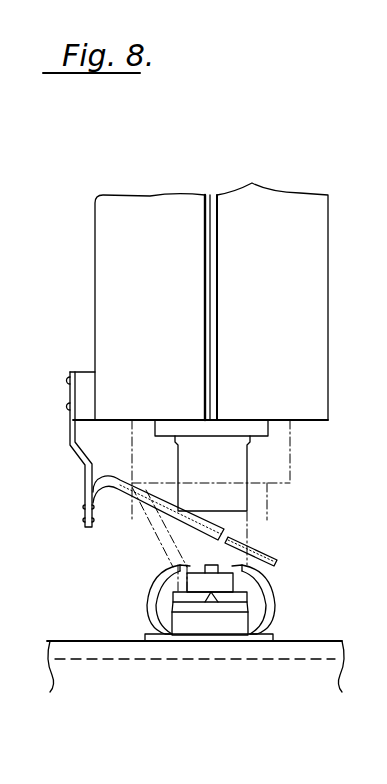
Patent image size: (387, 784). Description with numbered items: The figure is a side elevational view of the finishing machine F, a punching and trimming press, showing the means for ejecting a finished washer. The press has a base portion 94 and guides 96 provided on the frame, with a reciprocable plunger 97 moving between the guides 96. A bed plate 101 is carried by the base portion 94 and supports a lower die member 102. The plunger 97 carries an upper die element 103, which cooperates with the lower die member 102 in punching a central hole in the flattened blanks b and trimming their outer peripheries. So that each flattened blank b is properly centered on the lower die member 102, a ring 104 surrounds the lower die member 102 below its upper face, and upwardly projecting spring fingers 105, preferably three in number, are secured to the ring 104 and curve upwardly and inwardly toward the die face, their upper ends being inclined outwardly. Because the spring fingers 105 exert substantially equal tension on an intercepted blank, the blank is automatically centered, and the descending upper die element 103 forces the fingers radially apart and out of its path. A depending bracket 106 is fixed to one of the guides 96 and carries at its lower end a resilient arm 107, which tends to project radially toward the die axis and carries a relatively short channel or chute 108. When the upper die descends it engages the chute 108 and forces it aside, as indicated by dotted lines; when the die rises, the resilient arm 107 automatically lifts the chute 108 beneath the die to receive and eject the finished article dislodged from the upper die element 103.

The base portion 94 is at (195, 666).
The guides 96 is at (200, 301).
The reciprocable plunger 97 is at (253, 428).
The bed plate 101 is at (278, 653).
The lower die member 102 is at (218, 583).
The upper die element 103 is at (212, 473).
The ring 104 is at (168, 630).
The spring fingers 105 is at (167, 585).
The depending bracket 106 is at (72, 451).
The resilient arm 107 is at (115, 473).
The chute 108 is at (221, 526).
The finishing machine F is at (247, 244).
The flattened slug b is at (263, 552).